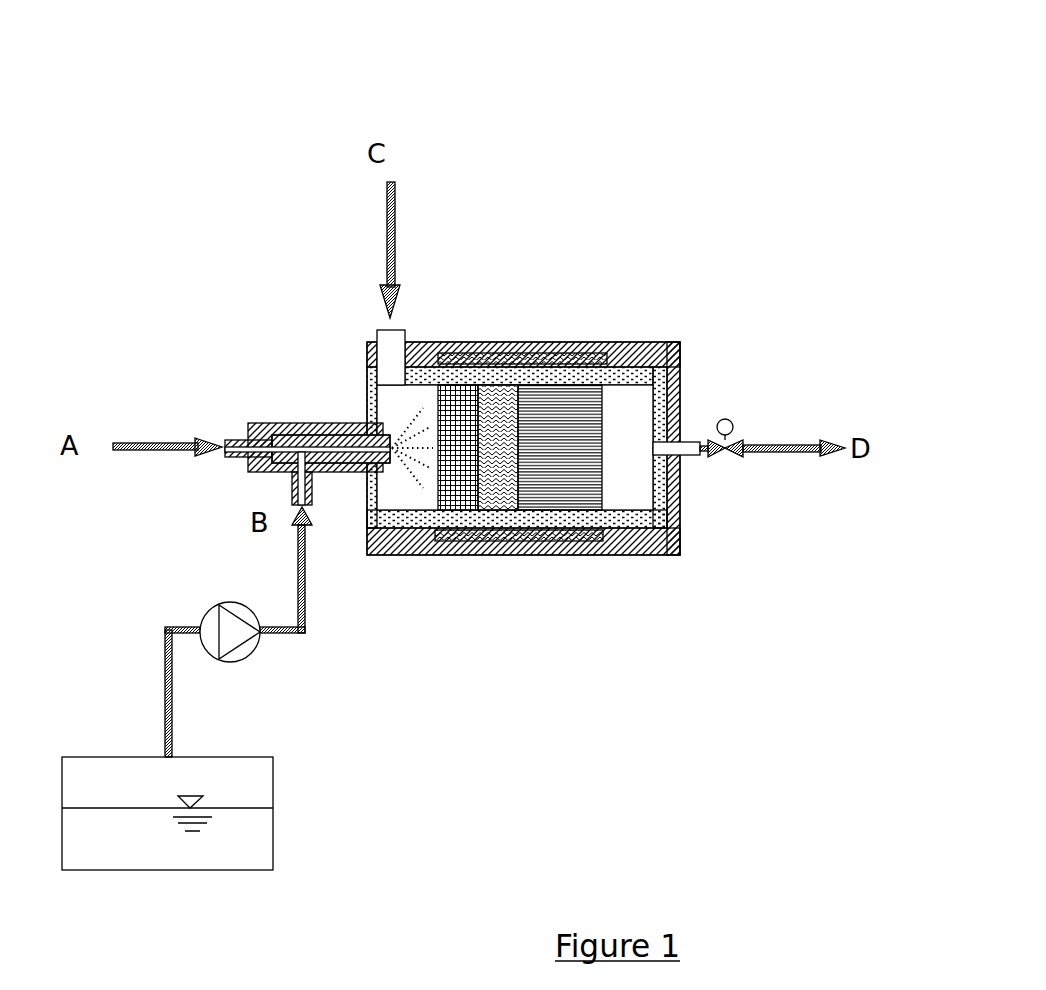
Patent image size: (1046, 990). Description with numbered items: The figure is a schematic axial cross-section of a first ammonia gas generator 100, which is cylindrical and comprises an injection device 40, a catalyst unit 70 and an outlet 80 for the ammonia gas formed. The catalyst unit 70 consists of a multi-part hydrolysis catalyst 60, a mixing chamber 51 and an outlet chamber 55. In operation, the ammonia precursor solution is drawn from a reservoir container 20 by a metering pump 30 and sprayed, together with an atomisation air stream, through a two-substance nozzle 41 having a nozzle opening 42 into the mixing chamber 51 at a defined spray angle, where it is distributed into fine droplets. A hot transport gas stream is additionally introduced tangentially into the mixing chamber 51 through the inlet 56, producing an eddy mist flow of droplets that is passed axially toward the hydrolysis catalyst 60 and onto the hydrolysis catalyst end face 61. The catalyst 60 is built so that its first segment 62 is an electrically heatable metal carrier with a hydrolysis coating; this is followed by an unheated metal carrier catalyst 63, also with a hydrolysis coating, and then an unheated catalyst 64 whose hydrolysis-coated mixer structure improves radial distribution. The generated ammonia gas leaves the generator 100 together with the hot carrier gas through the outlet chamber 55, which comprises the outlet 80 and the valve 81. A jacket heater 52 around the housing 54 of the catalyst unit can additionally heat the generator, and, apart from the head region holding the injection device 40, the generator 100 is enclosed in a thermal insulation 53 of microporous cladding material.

The ammonia gas generator 100 is at (583, 178).
The reservoir container 20 is at (167, 870).
The metering pump 30 is at (232, 662).
The injection device 40 is at (231, 419).
The two-substance nozzle 41 is at (328, 435).
The nozzle opening 42 is at (343, 472).
The mixing chamber 51 is at (368, 341).
The jacket heater 52 is at (523, 348).
The thermal insulation 53 is at (643, 350).
The housing 54 is at (661, 390).
The outlet chamber 55 is at (633, 428).
The inlet 56 is at (390, 408).
The hydrolysis catalyst 60 is at (542, 584).
The hydrolysis catalyst end face 61 is at (437, 448).
The first segment 62 is at (458, 452).
The unheated metal carrier catalyst 63 is at (493, 448).
The unheated catalyst 64 is at (570, 452).
The catalyst unit 70 is at (567, 372).
The outlet 80 is at (680, 480).
The valve 81 is at (720, 455).